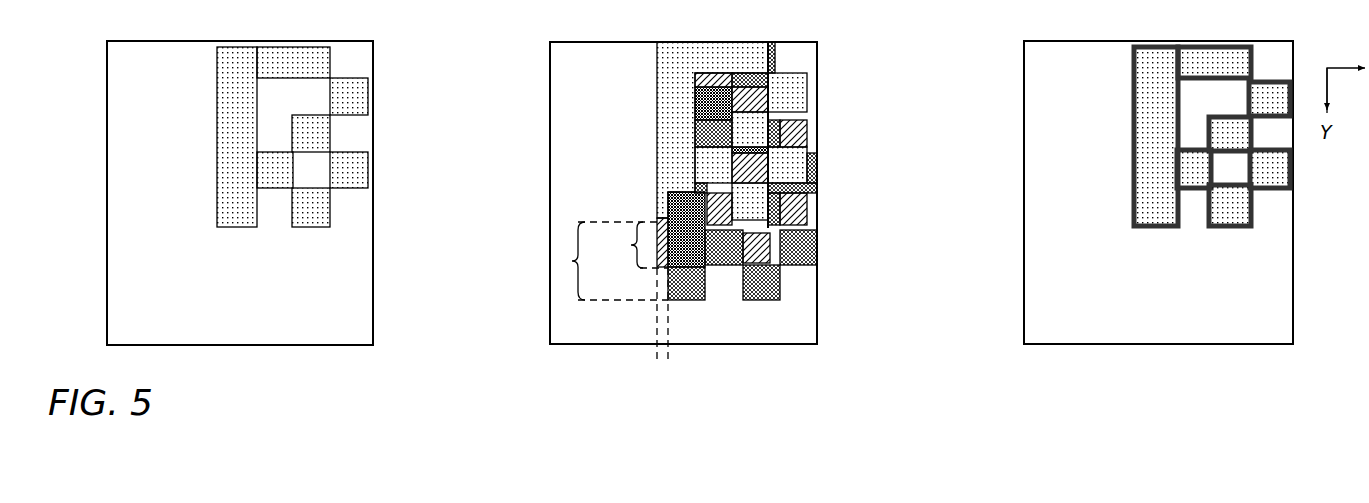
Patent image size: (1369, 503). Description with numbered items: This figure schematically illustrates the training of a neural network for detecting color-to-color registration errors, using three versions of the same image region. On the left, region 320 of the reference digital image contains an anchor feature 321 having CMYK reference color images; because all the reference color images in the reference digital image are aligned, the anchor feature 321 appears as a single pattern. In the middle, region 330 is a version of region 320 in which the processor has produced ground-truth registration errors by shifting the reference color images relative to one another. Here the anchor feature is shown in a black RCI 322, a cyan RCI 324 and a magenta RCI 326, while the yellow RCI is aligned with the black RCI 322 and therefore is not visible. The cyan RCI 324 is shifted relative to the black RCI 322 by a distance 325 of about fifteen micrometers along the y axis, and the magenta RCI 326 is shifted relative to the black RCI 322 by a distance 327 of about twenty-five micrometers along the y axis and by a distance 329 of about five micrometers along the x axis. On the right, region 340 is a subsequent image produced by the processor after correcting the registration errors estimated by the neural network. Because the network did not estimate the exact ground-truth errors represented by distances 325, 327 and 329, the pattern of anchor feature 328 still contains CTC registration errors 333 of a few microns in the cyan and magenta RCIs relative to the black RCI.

The region 320 is at (100, 247).
The anchor feature 321 is at (237, 247).
The black RCI 322 is at (665, 70).
The cyan RCI 324 is at (762, 249).
The distance 325 is at (629, 245).
The magenta RCI 326 is at (690, 287).
The distance 327 is at (572, 261).
The anchor feature 328 is at (1126, 230).
The distance 329 is at (692, 358).
The region 330 is at (540, 219).
The CTC registration errors 333 is at (1205, 210).
The region 340 is at (1015, 247).